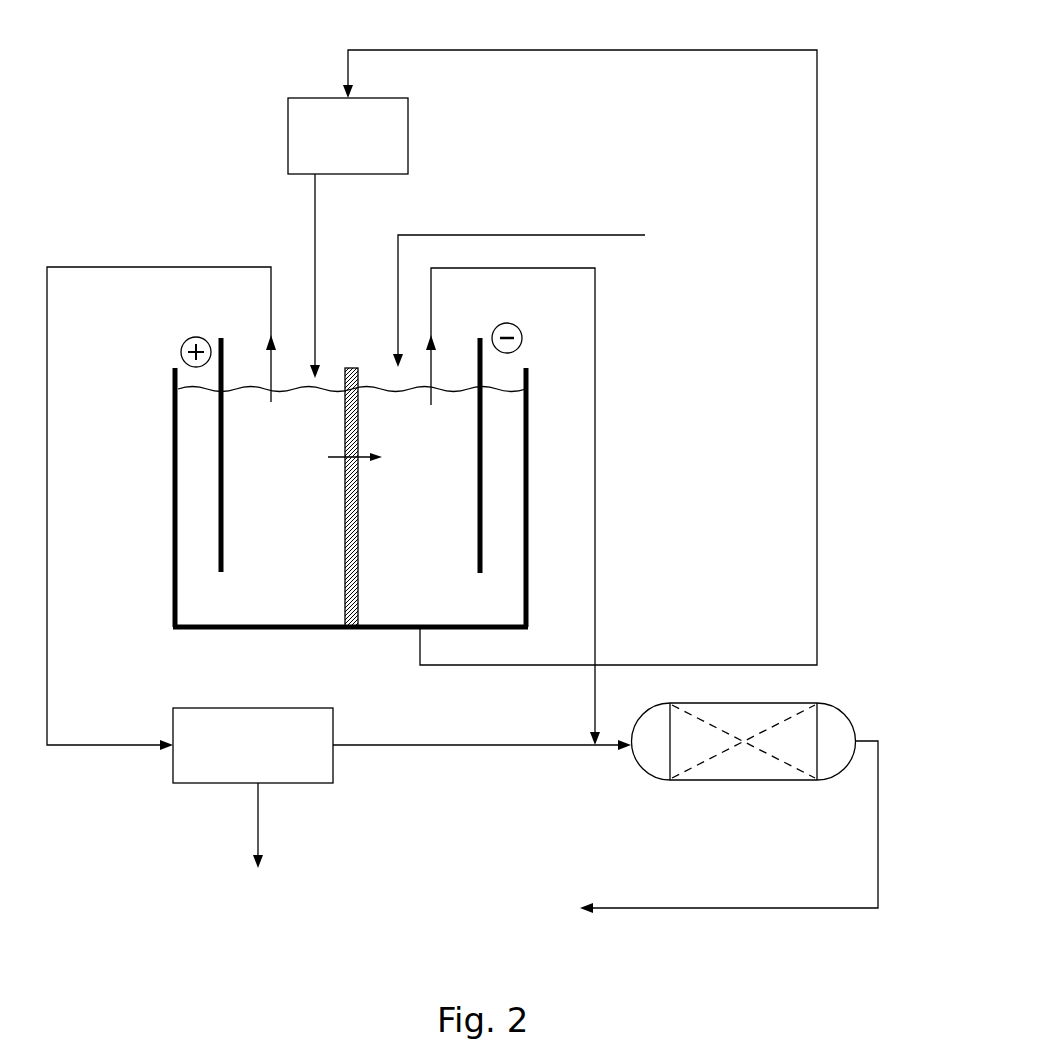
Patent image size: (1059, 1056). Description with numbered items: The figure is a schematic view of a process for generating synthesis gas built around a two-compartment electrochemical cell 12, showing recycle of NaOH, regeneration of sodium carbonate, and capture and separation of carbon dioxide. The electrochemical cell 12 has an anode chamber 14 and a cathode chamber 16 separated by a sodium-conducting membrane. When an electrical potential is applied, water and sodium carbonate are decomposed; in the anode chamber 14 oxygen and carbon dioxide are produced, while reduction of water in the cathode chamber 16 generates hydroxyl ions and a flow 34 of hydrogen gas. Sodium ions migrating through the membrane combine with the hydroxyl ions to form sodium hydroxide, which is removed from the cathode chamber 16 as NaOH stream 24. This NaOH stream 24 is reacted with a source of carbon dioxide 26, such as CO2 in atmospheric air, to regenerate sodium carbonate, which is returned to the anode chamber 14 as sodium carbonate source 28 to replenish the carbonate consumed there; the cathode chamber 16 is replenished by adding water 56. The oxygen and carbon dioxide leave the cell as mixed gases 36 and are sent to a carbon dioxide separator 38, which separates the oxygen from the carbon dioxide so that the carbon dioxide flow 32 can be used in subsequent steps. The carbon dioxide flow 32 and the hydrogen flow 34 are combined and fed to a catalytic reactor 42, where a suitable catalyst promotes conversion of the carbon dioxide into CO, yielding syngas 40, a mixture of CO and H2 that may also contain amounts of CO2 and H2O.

The electrochemical cell 12 is at (142, 502).
The anode chamber 14 is at (283, 613).
The cathode chamber 16 is at (444, 613).
The NaOH stream 24 is at (508, 51).
The source of carbon dioxide 26 is at (288, 123).
The sodium carbonate source 28 is at (316, 236).
The flow of carbon dioxide 32 is at (405, 747).
The flow of hydrogen gas 34 is at (596, 350).
The mixed gases 36 is at (130, 265).
The carbon dioxide separator 38 is at (202, 783).
The syngas 40 is at (675, 908).
The catalytic reactor 42 is at (752, 781).
The water 56 is at (568, 233).